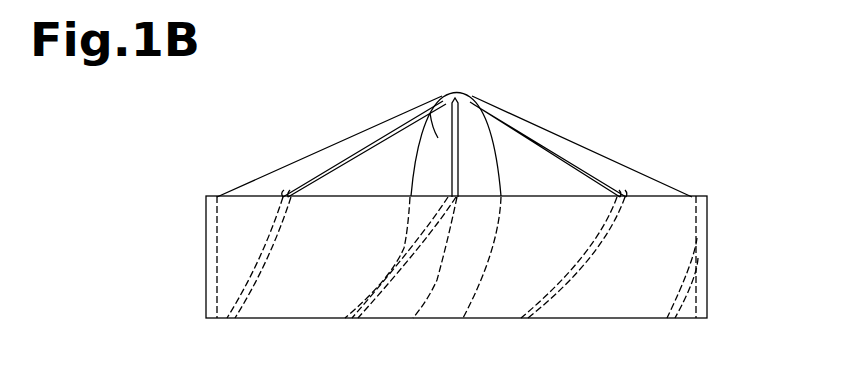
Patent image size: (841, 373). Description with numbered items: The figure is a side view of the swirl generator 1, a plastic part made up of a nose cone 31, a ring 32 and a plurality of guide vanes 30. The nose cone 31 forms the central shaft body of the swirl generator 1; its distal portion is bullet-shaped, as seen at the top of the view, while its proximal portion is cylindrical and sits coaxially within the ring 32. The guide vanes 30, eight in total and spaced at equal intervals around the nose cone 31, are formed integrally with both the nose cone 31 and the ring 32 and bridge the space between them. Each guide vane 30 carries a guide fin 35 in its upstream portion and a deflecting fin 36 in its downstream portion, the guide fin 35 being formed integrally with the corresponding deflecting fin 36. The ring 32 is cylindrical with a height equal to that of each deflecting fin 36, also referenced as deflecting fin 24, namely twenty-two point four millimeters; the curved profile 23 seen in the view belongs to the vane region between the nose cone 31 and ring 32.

The swirl generator 1 is at (693, 165).
The dome-shaped arc portion 23 is at (450, 242).
The deflecting fin 24 is at (368, 303).
The guide vane 30 is at (635, 177).
The nose cone 31 is at (414, 107).
The ring 32 is at (707, 208).
The guide fin 35 is at (312, 153).
The deflecting fin 36 is at (243, 294).